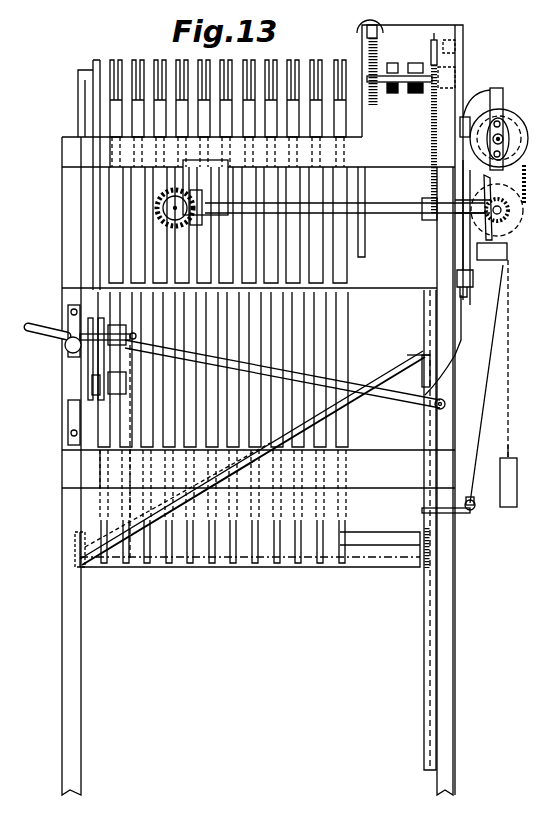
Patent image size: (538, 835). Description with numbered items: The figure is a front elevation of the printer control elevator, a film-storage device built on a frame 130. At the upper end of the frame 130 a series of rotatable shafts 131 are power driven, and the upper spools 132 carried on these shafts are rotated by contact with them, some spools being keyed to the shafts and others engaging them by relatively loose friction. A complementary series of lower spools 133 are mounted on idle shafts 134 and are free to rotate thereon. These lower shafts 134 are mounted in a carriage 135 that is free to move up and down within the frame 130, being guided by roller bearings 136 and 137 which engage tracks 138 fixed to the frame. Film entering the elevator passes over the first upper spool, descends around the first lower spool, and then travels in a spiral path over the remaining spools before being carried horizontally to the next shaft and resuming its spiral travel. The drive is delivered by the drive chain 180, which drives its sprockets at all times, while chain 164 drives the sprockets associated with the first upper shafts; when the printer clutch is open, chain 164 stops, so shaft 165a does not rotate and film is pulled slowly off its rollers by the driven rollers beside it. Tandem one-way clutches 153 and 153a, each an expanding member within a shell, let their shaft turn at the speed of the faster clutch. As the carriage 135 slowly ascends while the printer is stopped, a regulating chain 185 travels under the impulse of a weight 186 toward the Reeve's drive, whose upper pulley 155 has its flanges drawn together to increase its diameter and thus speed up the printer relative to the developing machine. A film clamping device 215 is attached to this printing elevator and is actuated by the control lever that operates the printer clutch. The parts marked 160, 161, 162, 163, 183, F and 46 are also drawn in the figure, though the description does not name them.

The frame 130 is at (66, 600).
The rotatable shafts 131 is at (115, 80).
The upper spools 132 is at (138, 75).
The lower spools 133 is at (169, 560).
The shafts 134 is at (208, 540).
The carriage 135 is at (370, 562).
The roller bearings 136 is at (425, 355).
The roller bearings 137 is at (425, 570).
The tracks 138 is at (428, 619).
The one-way clutch 153 is at (395, 94).
The one-way clutch 153a is at (413, 93).
The upper pulley 155 is at (510, 117).
The gear 160 is at (487, 236).
The lever arm 161 is at (480, 224).
The shaft 162 is at (377, 205).
The collar 163 is at (424, 220).
The chain 164 is at (432, 125).
The shaft 165a is at (402, 76).
The drive chain 180 is at (378, 57).
The cap 183 is at (360, 32).
The regulating chain 185 is at (478, 500).
The weight 186 is at (510, 507).
The film clamping device 215 is at (128, 407).
The frame F is at (82, 410).
The arm 46 is at (490, 88).